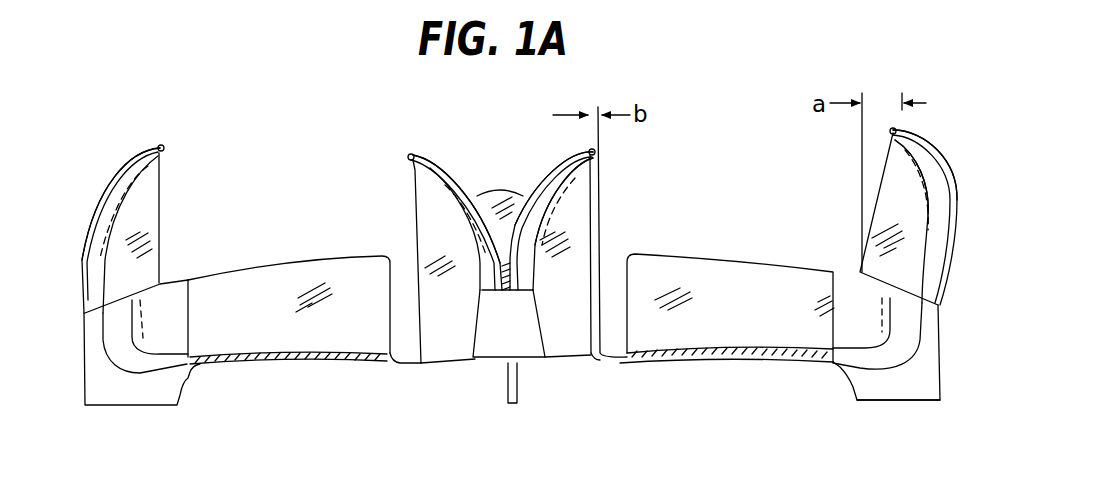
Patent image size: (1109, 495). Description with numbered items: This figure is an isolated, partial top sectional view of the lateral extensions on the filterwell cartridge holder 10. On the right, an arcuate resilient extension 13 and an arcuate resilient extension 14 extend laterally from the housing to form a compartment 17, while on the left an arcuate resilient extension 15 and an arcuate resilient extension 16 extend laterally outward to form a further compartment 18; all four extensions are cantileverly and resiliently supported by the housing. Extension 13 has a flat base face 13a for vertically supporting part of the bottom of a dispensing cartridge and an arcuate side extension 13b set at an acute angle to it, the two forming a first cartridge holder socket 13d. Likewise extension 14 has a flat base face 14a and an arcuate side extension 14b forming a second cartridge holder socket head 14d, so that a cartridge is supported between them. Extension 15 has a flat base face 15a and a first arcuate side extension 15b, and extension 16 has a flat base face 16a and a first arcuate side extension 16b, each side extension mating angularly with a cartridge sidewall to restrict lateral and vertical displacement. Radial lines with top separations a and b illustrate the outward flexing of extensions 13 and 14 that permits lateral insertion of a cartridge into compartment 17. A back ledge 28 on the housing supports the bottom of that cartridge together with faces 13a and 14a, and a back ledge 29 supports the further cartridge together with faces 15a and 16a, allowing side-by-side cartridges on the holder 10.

The filterwell cartridge holder 10 is at (920, 390).
The arcuate resilient extension 13 is at (920, 126).
The flat base face 13a is at (880, 216).
The arcuate side extension 13b is at (946, 177).
The first cartridge holder socket 13d is at (925, 205).
The arcuate resilient extension 14 is at (558, 152).
The flat base face 14a is at (575, 222).
The arcuate side extension 14b is at (552, 170).
The second cartridge holder socket head 14d is at (553, 205).
The arcuate resilient extension 15 is at (434, 155).
The flat base face 15a is at (430, 222).
The first arcuate side extension 15b is at (467, 172).
The arcuate resilient extension 16 is at (138, 145).
The flat base face 16a is at (140, 214).
The first arcuate side extension 16b is at (105, 177).
The compartment 17 is at (746, 225).
The compartment 18 is at (307, 223).
The back ledge 28 is at (718, 343).
The back ledge 29 is at (288, 337).